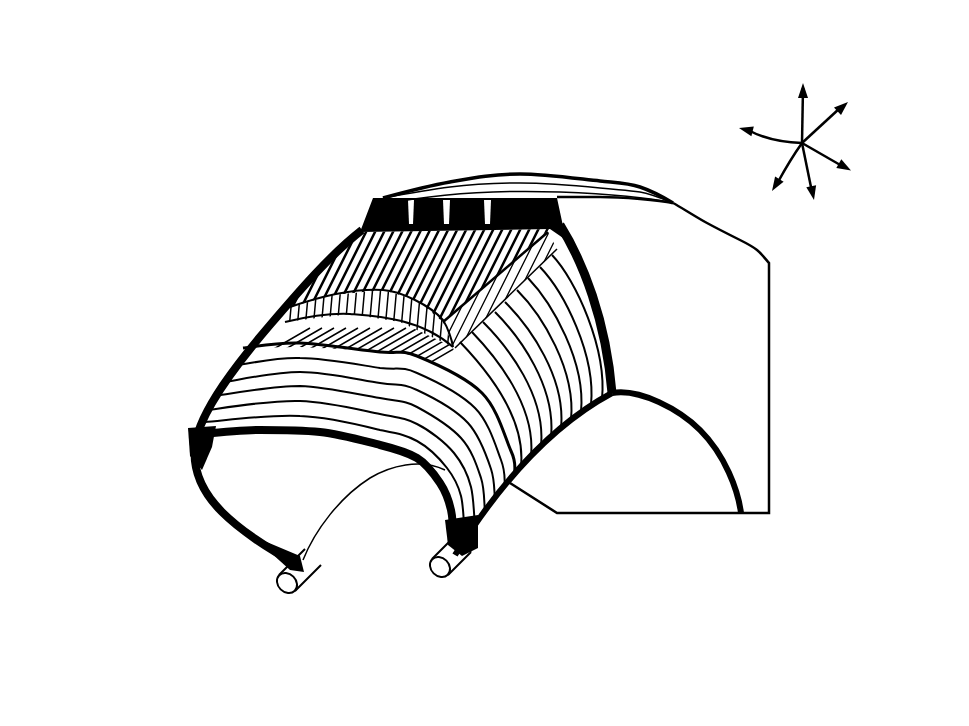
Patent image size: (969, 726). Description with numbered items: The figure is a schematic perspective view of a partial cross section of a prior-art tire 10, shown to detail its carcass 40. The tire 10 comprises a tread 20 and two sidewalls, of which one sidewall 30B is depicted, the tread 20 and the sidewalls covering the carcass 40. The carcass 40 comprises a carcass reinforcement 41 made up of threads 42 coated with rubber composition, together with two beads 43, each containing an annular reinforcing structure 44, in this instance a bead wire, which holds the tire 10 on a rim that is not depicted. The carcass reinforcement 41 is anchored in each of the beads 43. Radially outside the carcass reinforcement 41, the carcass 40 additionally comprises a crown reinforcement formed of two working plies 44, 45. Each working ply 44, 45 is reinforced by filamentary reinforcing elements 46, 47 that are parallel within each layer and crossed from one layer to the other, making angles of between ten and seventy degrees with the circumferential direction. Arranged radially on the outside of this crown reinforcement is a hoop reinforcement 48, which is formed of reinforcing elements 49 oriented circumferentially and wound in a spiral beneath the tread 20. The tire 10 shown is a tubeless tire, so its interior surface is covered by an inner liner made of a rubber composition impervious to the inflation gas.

The tire 10 is at (184, 93).
The tread 20 is at (470, 185).
The sidewall 30B is at (717, 337).
The carcass 40 is at (92, 175).
The carcass reinforcement 41 is at (163, 340).
The threads 42 is at (248, 348).
The beads 43 is at (240, 540).
The annular reinforcing structures / working ply 44 is at (176, 272).
The working ply 45 is at (205, 195).
The filamentary reinforcing elements 46 is at (277, 302).
The filamentary reinforcing elements 47 is at (303, 278).
The hoop reinforcement 48 is at (270, 130).
The reinforcing elements 49 is at (380, 200).